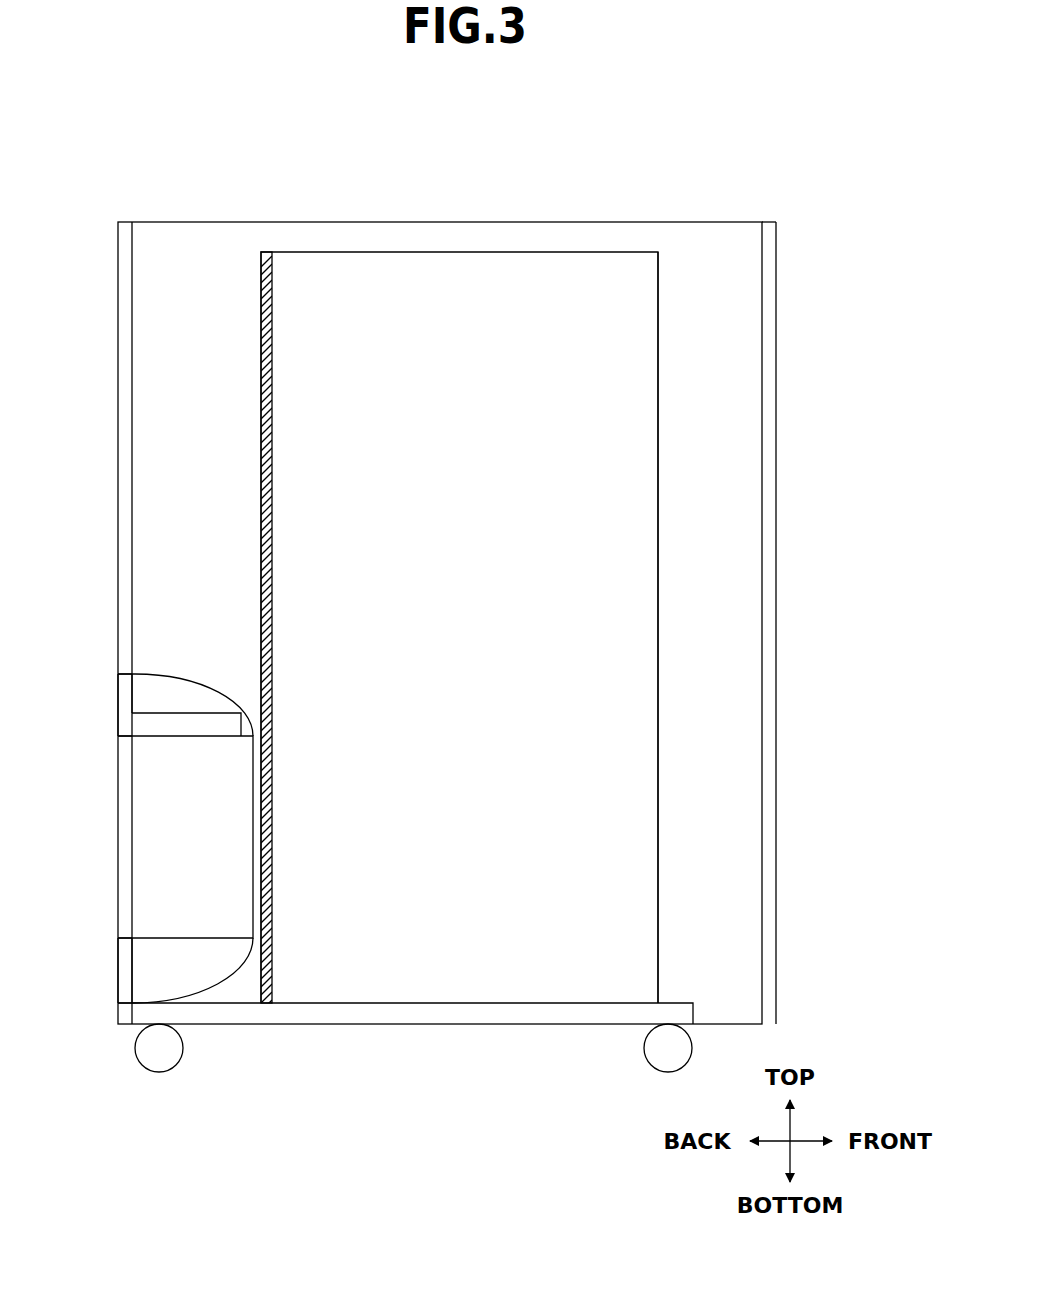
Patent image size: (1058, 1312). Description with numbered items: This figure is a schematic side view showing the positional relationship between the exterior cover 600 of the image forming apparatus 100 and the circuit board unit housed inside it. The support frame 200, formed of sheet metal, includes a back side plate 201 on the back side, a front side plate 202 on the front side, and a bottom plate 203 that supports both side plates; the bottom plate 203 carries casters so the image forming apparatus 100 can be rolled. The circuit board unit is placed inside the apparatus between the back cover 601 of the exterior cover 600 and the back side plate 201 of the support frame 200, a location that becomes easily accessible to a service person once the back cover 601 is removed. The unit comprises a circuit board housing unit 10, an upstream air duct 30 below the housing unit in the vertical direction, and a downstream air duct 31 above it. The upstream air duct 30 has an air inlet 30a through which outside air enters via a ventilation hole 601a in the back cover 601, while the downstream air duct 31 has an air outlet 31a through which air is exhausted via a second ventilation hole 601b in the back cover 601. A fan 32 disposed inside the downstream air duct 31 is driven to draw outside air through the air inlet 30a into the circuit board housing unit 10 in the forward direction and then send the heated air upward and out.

The image forming apparatus 100 is at (506, 168).
The support frame 200 is at (348, 243).
The exterior cover 600 is at (661, 208).
The back cover 601 is at (126, 243).
The ventilation hole 601a is at (118, 975).
The ventilation hole 601b is at (118, 708).
The back side plate 201 is at (262, 345).
The front side plate 202 is at (656, 838).
The bottom plate 203 is at (375, 1025).
The circuit board housing unit 10 is at (156, 840).
The upstream air duct 30 is at (203, 963).
The air inlet 30a is at (133, 980).
The downstream air duct 31 is at (212, 690).
The air outlet 31a is at (133, 707).
The fan 32 is at (202, 730).